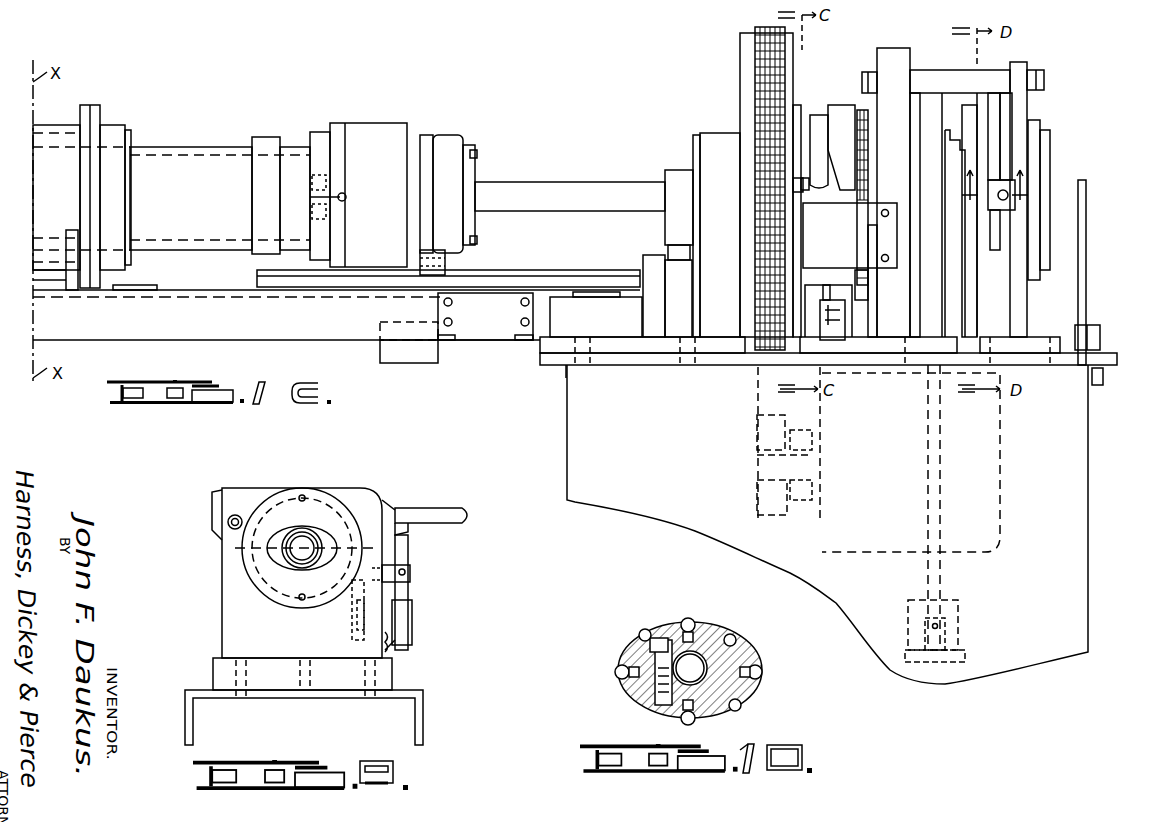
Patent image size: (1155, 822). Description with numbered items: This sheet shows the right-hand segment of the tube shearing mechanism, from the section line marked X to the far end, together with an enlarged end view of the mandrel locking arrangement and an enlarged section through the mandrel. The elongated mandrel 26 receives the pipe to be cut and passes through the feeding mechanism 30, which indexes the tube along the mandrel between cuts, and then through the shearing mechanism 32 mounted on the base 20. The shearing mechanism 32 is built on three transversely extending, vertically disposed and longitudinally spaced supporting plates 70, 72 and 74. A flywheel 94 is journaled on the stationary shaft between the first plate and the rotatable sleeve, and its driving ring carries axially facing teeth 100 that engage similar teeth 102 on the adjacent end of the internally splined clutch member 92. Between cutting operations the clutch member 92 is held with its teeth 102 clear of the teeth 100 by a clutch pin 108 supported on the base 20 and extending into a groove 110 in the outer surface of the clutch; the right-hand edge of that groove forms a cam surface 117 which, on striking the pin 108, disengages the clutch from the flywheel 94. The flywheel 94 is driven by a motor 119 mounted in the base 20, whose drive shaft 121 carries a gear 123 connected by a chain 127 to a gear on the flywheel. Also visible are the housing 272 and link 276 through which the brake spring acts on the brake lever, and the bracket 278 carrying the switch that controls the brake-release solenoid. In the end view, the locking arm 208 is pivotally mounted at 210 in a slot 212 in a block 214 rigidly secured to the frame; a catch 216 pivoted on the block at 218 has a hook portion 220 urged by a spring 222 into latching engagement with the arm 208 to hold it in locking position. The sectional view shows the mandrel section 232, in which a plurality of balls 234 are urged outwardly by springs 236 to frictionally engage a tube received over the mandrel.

In FIG. 1C, the base 20 is at (1072, 592).
In FIG. 1C, the mandrel 26 is at (503, 180).
In FIG. 1C, the feeding mechanism 30 is at (137, 115).
In FIG. 1C, the shearing mechanism 32 is at (876, 41).
In FIG. 1C, the supporting plate 70 is at (730, 293).
In FIG. 1C, the supporting plate 72 is at (905, 309).
In FIG. 1C, the supporting plate 74 is at (1027, 301).
In FIG. 1C, the clutch member 92 is at (852, 163).
In FIG. 1C, the flywheel 94 is at (740, 36).
In FIG. 1C, the teeth 100 is at (797, 184).
In FIG. 1C, the teeth 102 is at (814, 190).
In FIG. 1C, the clutch pin 108 is at (825, 285).
In FIG. 1C, the groove 110 is at (818, 115).
In FIG. 1C, the cam surface 117 is at (832, 118).
In FIG. 1C, the motor 119 is at (915, 552).
In FIG. 1C, the drive shaft 121 is at (757, 497).
In FIG. 1C, the gear 123 is at (757, 410).
In FIG. 1C, the chain 127 is at (757, 70).
In FIG. 1C, the housing 272 is at (960, 620).
In FIG. 1C, the link 276 is at (942, 582).
In FIG. 1C, the bracket 278 is at (860, 225).
In FIG. 9, the locking arm 208 is at (432, 501).
In FIG. 9, the pivot 210 is at (245, 514).
In FIG. 9, the slot 212 is at (392, 512).
In FIG. 9, the block 214 is at (318, 646).
In FIG. 9, the catch 216 is at (409, 596).
In FIG. 9, the pivot 218 is at (410, 578).
In FIG. 9, the hook portion 220 is at (408, 535).
In FIG. 9, the spring 222 is at (395, 648).
In FIG. 10, the mandrel section 232 is at (708, 636).
In FIG. 10, the balls 234 is at (710, 712).
In FIG. 10, the springs 236 is at (755, 658).